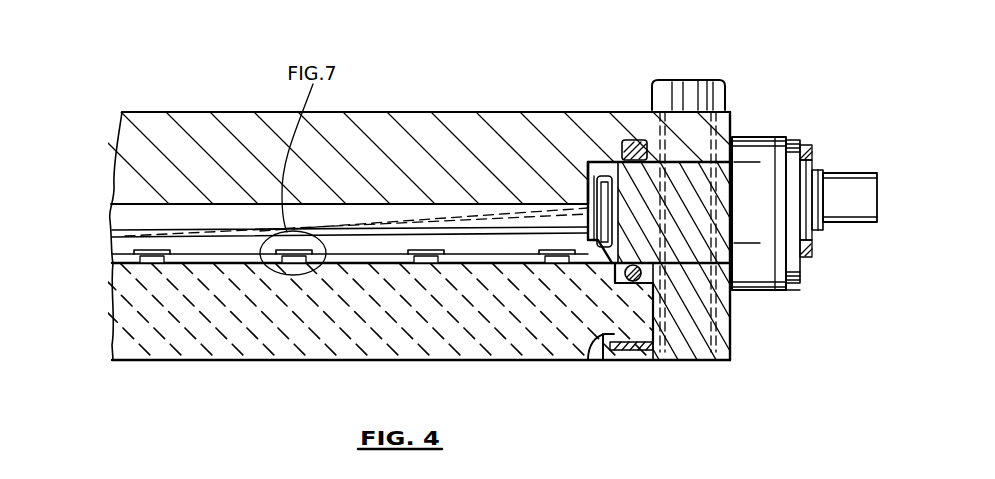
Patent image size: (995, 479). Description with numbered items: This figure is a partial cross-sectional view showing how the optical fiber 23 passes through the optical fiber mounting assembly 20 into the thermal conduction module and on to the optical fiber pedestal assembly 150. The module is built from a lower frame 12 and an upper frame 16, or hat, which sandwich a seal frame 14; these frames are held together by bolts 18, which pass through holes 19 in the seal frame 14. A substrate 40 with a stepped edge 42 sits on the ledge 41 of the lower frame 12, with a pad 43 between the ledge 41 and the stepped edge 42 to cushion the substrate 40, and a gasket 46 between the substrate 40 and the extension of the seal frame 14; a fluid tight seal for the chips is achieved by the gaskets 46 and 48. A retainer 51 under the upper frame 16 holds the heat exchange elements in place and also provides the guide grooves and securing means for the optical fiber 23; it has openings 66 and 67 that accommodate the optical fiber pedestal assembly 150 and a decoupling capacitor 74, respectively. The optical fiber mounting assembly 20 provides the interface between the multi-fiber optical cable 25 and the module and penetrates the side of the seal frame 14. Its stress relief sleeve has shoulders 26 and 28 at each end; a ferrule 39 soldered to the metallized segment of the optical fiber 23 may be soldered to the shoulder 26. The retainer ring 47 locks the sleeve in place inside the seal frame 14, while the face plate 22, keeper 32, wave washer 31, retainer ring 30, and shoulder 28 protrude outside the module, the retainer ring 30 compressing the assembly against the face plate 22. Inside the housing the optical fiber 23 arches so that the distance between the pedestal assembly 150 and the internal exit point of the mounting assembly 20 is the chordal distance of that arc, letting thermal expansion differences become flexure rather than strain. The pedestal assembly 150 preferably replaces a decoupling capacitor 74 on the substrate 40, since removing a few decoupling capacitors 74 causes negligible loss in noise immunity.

The lower frame 12 is at (733, 332).
The seal frame 14 is at (728, 145).
The upper frame 16 is at (388, 168).
The bolts 18 is at (688, 80).
The holes 19 is at (700, 361).
The optical fiber mounting assembly 20 is at (799, 373).
The face plate 22 is at (757, 140).
The optical fiber 23 is at (118, 226).
The multi-fiber optical cable 25 is at (855, 174).
The shoulder 26 is at (585, 272).
The shoulder 28 is at (822, 228).
The retainer ring 30 is at (808, 150).
The wave washer 31 is at (797, 142).
The keeper 32 is at (792, 292).
The ferrule 39 is at (590, 185).
The substrate 40 is at (243, 323).
The ledge 41 is at (613, 360).
The stepped edge 42 is at (597, 352).
The pad 43 is at (632, 351).
The gasket 46 is at (628, 279).
The retainer ring 47 is at (600, 178).
The gasket 48 is at (634, 140).
The retainer 51 is at (414, 204).
The opening 66 is at (258, 238).
The opening 67 is at (522, 267).
The decoupling capacitor 74 is at (152, 265).
The optical fiber pedestal assembly 150 is at (266, 274).